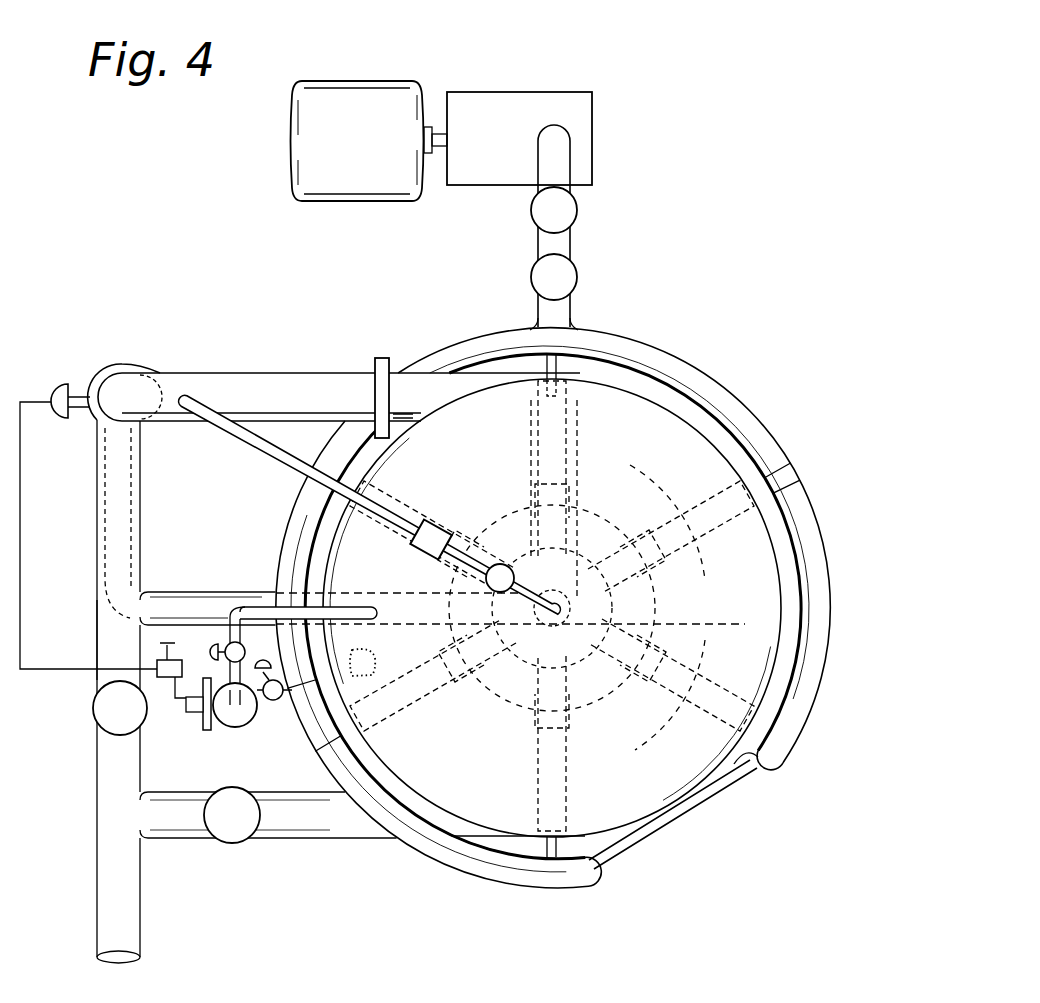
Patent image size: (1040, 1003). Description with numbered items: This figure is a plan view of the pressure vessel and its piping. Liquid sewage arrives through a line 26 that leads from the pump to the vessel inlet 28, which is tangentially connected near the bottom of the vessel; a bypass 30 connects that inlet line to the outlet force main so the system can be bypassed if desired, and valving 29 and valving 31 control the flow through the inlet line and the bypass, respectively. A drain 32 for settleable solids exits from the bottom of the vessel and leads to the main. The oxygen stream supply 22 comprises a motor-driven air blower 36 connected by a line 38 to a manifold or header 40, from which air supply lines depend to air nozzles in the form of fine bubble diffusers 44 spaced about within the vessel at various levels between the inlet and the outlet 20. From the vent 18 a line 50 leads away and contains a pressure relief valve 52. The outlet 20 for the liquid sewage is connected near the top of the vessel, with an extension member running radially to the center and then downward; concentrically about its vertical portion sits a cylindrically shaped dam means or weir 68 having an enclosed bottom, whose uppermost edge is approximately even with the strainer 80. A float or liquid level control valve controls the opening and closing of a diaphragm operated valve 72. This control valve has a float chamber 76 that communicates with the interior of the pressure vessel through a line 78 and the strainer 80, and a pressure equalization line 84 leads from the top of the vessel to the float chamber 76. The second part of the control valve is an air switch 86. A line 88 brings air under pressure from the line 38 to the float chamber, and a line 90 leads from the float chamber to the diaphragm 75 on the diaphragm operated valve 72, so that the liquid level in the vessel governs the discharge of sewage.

The vent 18 is at (570, 614).
The outlet 20 is at (323, 372).
The oxygen stream supply 22 is at (598, 263).
The line 26 is at (128, 921).
The vessel inlet 28 is at (452, 828).
The valving 29 is at (240, 843).
The bypass 30 is at (96, 672).
The valving 31 is at (96, 700).
The drain 32 is at (178, 591).
The motor-driven air blower 36 is at (470, 88).
The line 38 is at (578, 211).
The manifold or header 40 is at (680, 368).
The fine bubble diffuser 44 is at (678, 520).
The line 50 is at (277, 455).
The pressure relief valve 52 is at (503, 563).
The weir 68 is at (650, 647).
The diaphragm operated valve 72 is at (106, 366).
The diaphragm 75 is at (55, 390).
The float chamber 76 is at (232, 728).
The line 78 is at (322, 712).
The strainer 80 is at (376, 659).
The pressure equalization line 84 is at (352, 606).
The air switch 86 is at (163, 695).
The line 88 is at (168, 645).
The line 90 is at (21, 512).